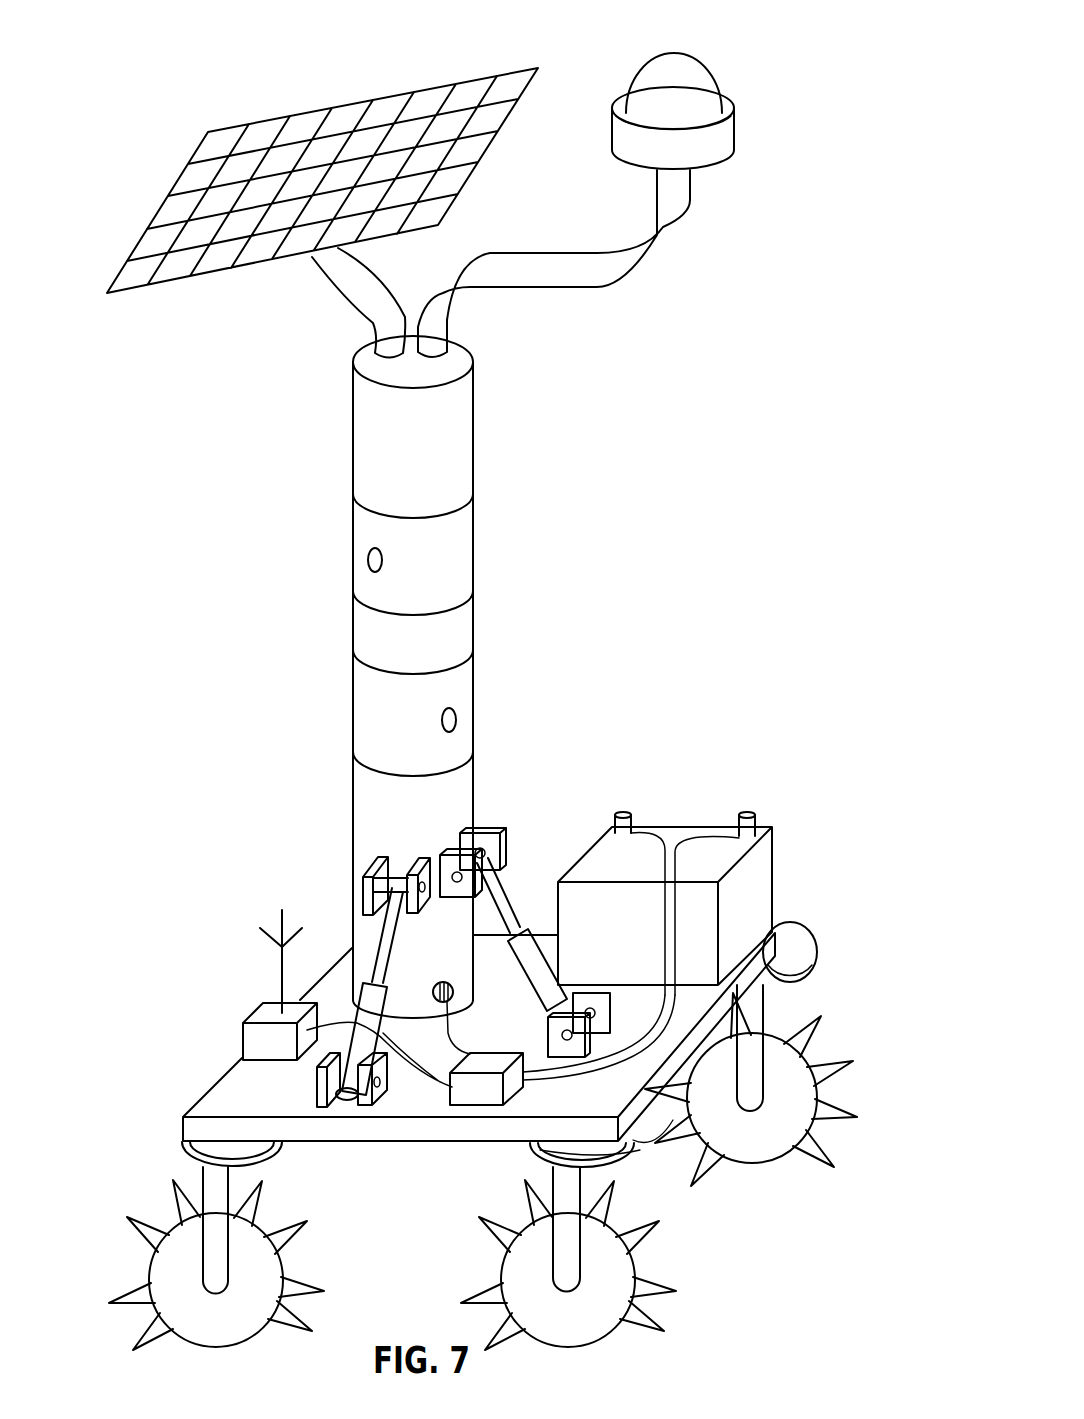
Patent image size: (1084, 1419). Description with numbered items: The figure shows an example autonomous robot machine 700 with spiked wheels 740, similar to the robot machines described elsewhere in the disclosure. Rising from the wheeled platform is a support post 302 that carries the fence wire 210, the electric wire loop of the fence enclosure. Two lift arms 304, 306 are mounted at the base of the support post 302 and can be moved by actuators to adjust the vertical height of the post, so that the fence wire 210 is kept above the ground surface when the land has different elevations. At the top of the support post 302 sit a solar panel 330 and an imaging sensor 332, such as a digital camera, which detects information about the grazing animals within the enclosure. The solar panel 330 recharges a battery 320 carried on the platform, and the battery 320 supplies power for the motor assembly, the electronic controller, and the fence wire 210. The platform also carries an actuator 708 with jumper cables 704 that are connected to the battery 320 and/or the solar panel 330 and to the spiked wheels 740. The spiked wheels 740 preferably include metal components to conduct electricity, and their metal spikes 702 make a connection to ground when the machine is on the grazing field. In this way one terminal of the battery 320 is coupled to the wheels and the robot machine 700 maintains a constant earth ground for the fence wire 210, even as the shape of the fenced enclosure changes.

The autonomous robot machine 700 is at (192, 40).
The solar panel 330 is at (190, 177).
The imaging sensor 332 is at (713, 140).
The support post 302 is at (460, 553).
The fence wire 210 is at (375, 562).
The lift arm 304 is at (383, 950).
The lift arm 306 is at (520, 875).
The battery 320 is at (760, 863).
The spikes 702 is at (305, 1212).
The spiked wheels 740 is at (287, 1253).
The jumper cables 704 is at (530, 1143).
The actuator 708 is at (480, 1093).